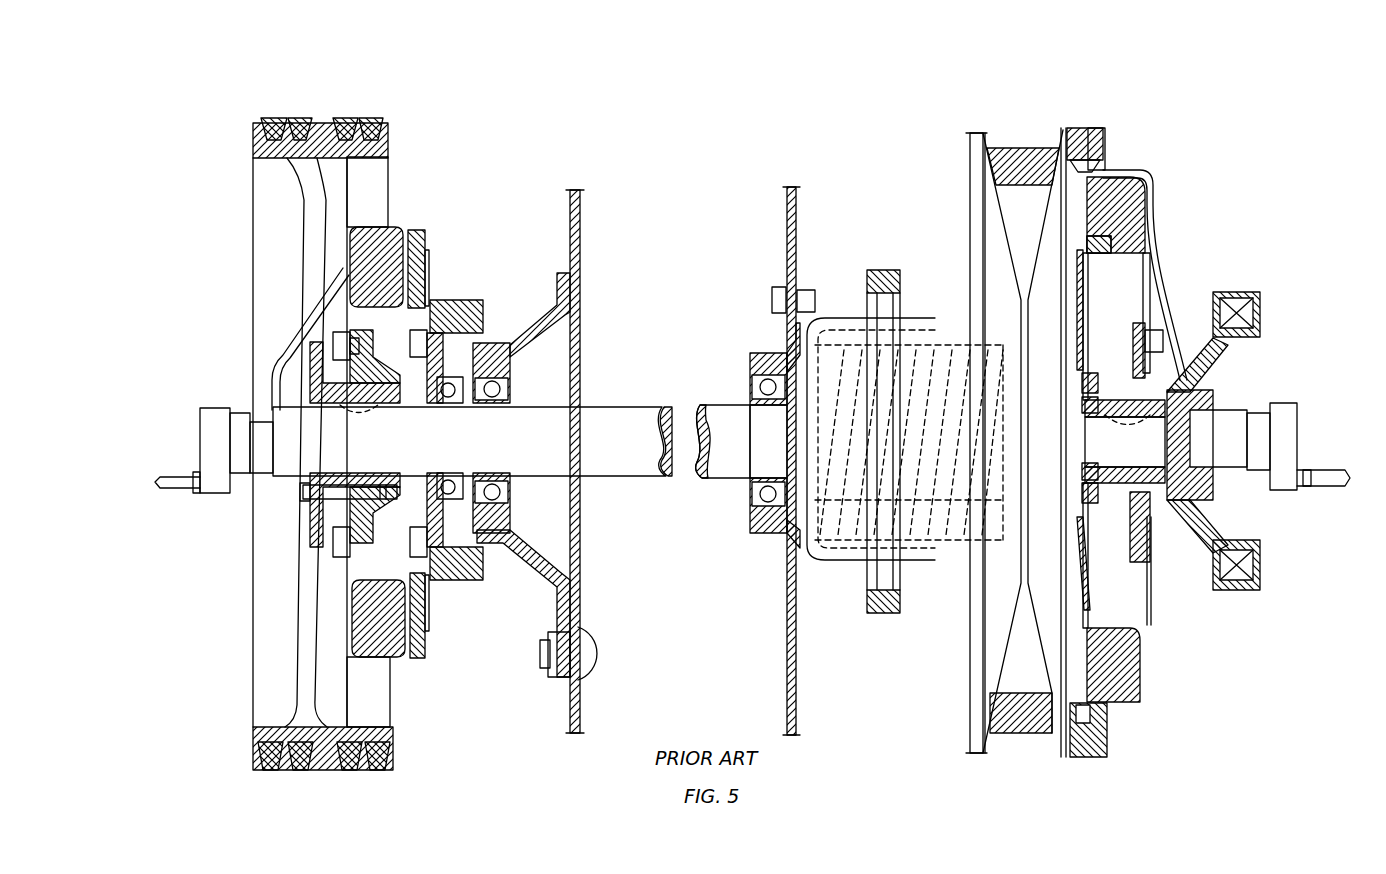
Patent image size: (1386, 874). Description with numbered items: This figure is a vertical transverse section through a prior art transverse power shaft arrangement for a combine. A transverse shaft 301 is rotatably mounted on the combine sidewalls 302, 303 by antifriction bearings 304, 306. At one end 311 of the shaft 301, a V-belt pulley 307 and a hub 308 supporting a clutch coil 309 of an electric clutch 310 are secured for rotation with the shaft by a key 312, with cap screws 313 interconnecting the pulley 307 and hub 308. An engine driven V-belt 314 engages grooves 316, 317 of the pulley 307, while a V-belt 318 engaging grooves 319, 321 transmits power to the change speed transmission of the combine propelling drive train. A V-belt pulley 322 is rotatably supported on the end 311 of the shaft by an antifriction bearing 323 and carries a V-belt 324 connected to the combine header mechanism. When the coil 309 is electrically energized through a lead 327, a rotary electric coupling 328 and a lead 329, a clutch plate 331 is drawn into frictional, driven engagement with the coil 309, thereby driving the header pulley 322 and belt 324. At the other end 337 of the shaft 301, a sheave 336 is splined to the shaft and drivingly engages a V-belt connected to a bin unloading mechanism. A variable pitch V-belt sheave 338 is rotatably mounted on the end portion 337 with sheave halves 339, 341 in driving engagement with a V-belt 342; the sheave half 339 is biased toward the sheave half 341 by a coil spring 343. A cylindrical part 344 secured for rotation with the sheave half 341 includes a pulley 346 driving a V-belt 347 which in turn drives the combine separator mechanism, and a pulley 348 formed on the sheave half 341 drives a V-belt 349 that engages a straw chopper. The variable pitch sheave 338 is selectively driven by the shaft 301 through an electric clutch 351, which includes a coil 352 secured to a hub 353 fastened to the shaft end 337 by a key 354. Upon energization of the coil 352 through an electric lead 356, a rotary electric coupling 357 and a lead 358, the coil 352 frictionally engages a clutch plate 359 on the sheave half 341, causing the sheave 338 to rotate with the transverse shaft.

The transverse shaft 301 is at (703, 408).
The combine sidewall 302 is at (578, 190).
The combine sidewall 303 is at (787, 190).
The antifriction bearing 304 is at (508, 376).
The antifriction bearing 306 is at (752, 365).
The V-belt pulley 307 is at (253, 152).
The hub 308 is at (372, 362).
The clutch coil 309 is at (402, 230).
The electric clutch 310 is at (410, 403).
The end of the shaft 311 is at (300, 462).
The key 312 is at (382, 408).
The cap screws 313 is at (306, 500).
The engine driven V-belt 314 is at (372, 120).
The groove 316 is at (347, 118).
The groove 317 is at (388, 126).
The V-belt 318 is at (256, 118).
The groove 319 is at (299, 118).
The groove 321 is at (278, 118).
The V-belt pulley 322 is at (485, 328).
The antifriction bearing 323 is at (462, 404).
The V-belt 324 is at (440, 305).
The lead 327 is at (182, 484).
The rotary electric coupling 328 is at (212, 410).
The lead 329 is at (283, 352).
The clutch plate 331 is at (426, 250).
The sheave 336 is at (1260, 330).
The other end of the shaft 337 is at (1200, 452).
The variable pitch V-belt sheave 338 is at (970, 422).
The sheave half 339 is at (970, 197).
The sheave half 341 is at (1050, 285).
The V-belt 342 is at (1025, 147).
The coil spring 343 is at (945, 340).
The cylindrical part 344 is at (833, 318).
The pulley 346 is at (898, 605).
The V-belt 347 is at (882, 272).
The pulley 348 is at (1105, 148).
The V-belt 349 is at (1085, 140).
The electric clutch 351 is at (1154, 399).
The coil 352 is at (1128, 675).
The hub 353 is at (1133, 338).
The key 354 is at (1117, 400).
The electric lead 356 is at (1312, 470).
The rotary electric coupling 357 is at (1290, 408).
The lead 358 is at (1158, 268).
The clutch plate 359 is at (1095, 246).